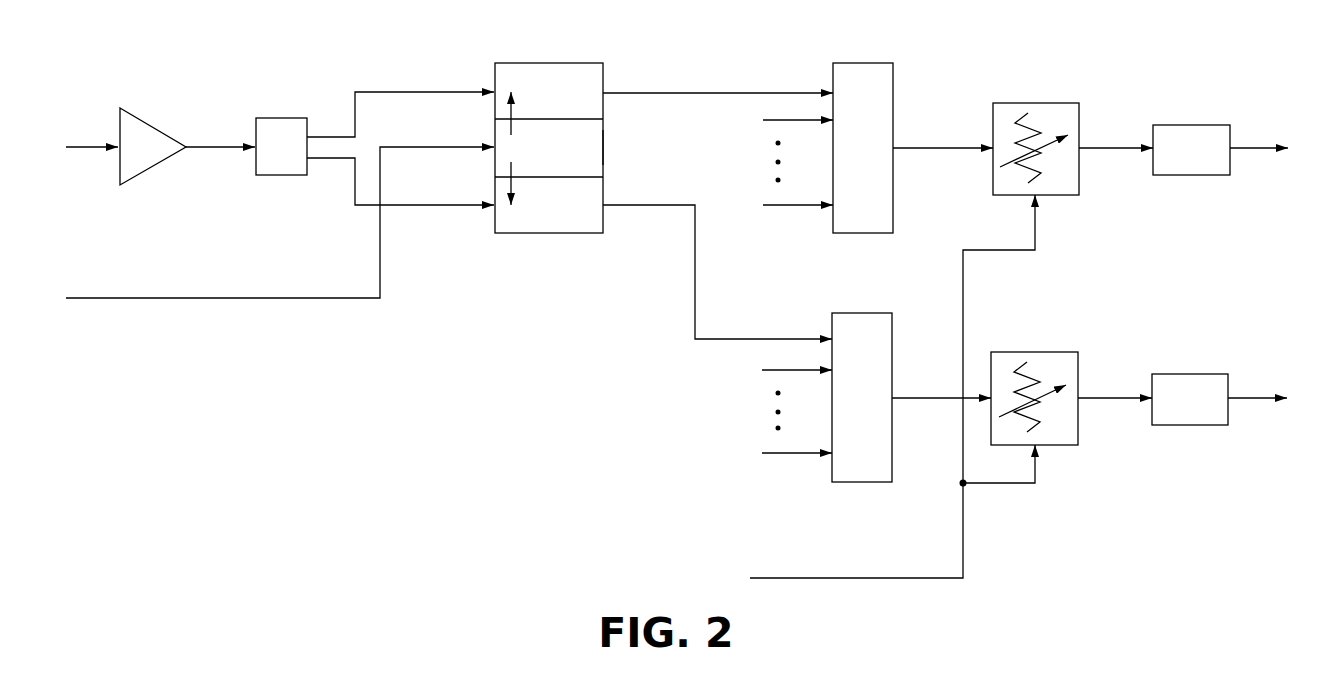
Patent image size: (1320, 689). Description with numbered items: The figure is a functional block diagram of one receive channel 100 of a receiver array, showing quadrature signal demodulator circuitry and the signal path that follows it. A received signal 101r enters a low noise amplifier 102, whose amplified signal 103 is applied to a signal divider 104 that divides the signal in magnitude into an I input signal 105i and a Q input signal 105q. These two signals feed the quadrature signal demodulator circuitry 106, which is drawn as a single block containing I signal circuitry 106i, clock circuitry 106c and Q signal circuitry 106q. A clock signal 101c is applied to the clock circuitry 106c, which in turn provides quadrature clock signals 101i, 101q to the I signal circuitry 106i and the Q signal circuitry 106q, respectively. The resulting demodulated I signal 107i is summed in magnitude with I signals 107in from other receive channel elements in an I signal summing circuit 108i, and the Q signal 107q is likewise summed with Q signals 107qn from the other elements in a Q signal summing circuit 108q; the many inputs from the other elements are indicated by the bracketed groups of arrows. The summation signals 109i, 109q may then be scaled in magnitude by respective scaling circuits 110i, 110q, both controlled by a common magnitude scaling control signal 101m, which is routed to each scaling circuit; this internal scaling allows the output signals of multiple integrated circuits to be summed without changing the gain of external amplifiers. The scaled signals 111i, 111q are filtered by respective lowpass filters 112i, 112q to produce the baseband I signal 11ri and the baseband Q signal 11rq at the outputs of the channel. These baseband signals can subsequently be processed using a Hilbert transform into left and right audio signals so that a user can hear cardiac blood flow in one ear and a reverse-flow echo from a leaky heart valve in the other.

The receive channel 100 is at (180, 410).
The received signal 101r is at (82, 146).
The low noise amplifier 102 is at (153, 125).
The amplified signal 103 is at (200, 147).
The signal divider 104 is at (280, 118).
The I input signal 105i is at (400, 88).
The Q input signal 105q is at (353, 183).
The clock signal 101c is at (113, 297).
The quadrature signal demodulator circuitry 106 is at (498, 240).
The I quadrature clock signal 101i is at (511, 126).
The Q quadrature clock signal 101q is at (511, 166).
The I signal circuitry 106i is at (605, 73).
The clock circuitry 106c is at (605, 147).
The Q signal circuitry 106q is at (605, 220).
The I signal 107i is at (735, 88).
The I signals from other elements 107in is at (760, 108).
The I signal summing circuit 108i is at (882, 43).
The I summation signal 109i is at (948, 147).
The I scaling circuit 110i is at (1043, 102).
The scaled I signal 111i is at (1103, 147).
The I lowpass filter 112i is at (1188, 123).
The baseband I signal 11ri is at (1250, 147).
The Q signal 107q is at (738, 338).
The Q signals from other elements 107qn is at (760, 358).
The Q signal summing circuit 108q is at (878, 293).
The Q summation signal 109q is at (947, 395).
The Q scaling circuit 110q is at (1040, 352).
The scaled Q signal 111q is at (1098, 397).
The Q lowpass filter 112q is at (1187, 373).
The baseband Q signal 11rq is at (1250, 397).
The magnitude scaling control signal 101m is at (820, 577).